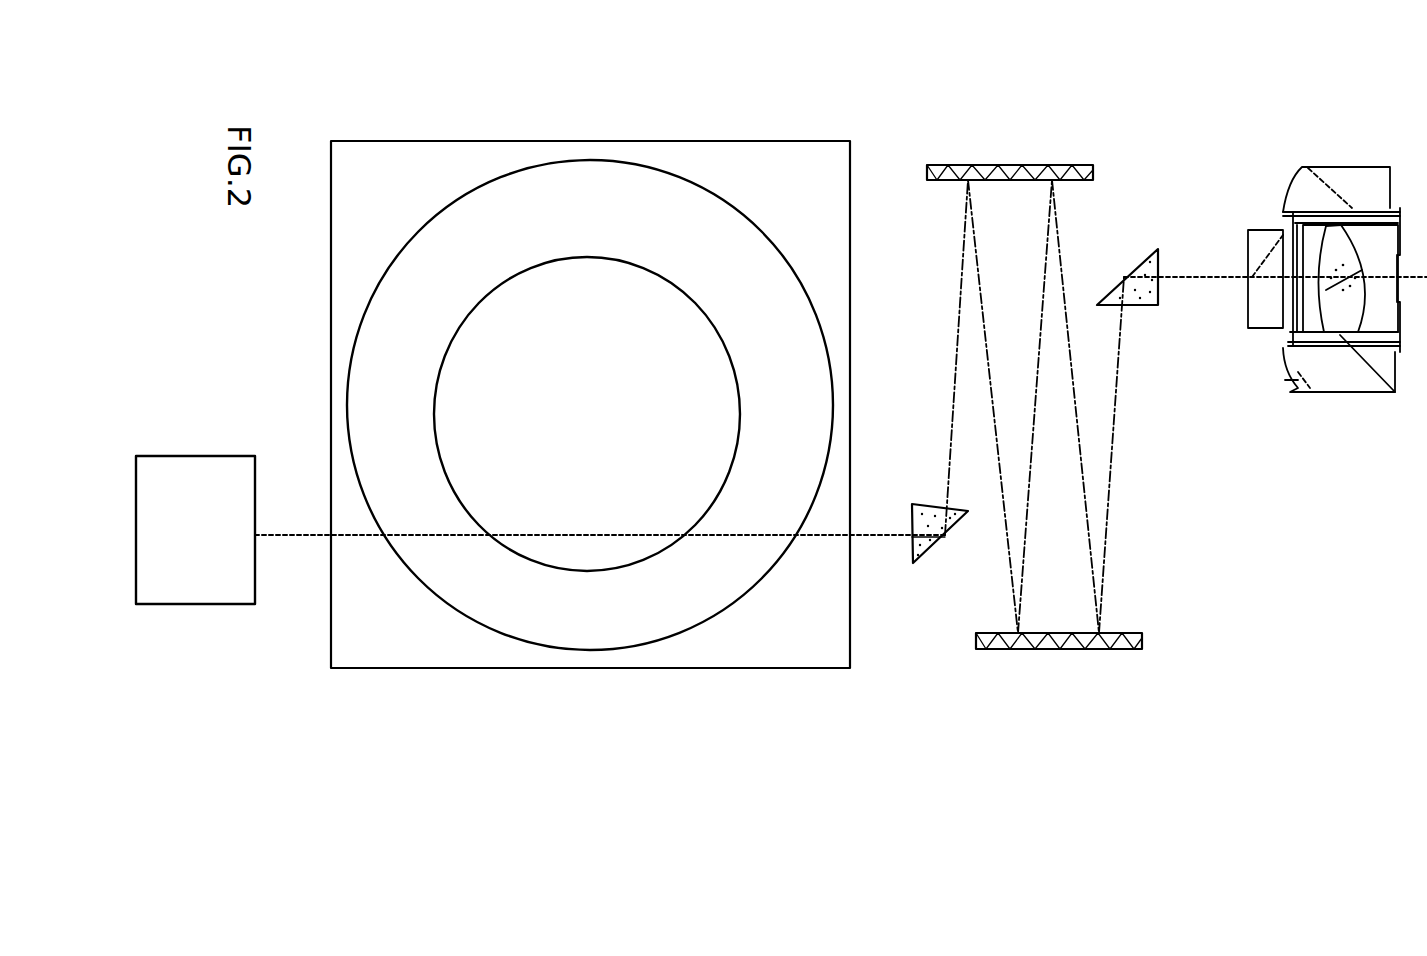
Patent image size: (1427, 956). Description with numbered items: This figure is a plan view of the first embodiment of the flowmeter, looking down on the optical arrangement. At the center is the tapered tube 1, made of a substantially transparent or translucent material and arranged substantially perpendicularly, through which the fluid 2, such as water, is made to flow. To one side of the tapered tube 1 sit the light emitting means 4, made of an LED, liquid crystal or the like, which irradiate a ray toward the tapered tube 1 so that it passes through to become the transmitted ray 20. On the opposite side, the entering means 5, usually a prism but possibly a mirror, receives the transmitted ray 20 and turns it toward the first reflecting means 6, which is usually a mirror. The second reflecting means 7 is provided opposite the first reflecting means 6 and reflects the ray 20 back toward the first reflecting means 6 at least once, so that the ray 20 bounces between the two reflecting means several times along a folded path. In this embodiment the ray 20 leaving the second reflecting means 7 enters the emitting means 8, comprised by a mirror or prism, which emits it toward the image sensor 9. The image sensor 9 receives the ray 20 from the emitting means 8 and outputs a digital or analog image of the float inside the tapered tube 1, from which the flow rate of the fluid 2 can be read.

The tapered tube 1 is at (587, 617).
The fluid 2 is at (494, 410).
The light emitting means 4 is at (183, 492).
The entering means 5 is at (918, 555).
The first reflecting means 6 is at (1003, 168).
The second reflecting means 7 is at (1032, 648).
The emitting means 8 is at (1140, 305).
The image sensor 9 is at (1348, 180).
The transmitted ray 20 is at (873, 533).